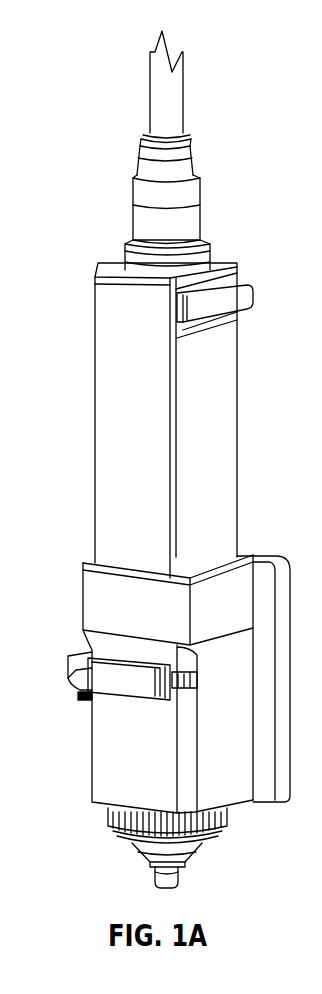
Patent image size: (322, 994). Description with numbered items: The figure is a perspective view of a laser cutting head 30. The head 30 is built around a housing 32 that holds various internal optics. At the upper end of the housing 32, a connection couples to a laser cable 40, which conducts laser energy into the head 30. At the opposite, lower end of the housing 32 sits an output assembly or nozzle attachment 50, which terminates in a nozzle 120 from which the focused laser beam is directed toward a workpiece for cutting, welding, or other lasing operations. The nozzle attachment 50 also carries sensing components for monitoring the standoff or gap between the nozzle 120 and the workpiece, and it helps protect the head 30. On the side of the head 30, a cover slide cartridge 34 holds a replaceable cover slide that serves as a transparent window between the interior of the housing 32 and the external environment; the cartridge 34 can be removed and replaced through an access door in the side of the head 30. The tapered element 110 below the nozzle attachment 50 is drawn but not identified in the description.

The laser cutting head 30 is at (86, 116).
The laser cable 40 is at (192, 146).
The housing 32 is at (237, 425).
The cover slide cartridge 34 is at (73, 685).
The nozzle attachment 50 is at (232, 843).
The nozzle cone 110 is at (145, 858).
The nozzle 120 is at (180, 878).